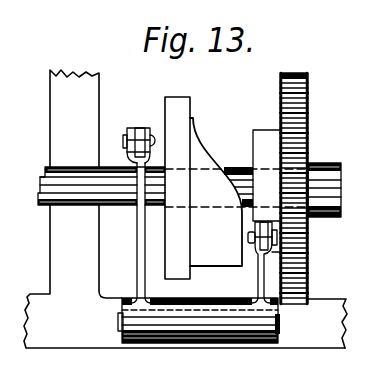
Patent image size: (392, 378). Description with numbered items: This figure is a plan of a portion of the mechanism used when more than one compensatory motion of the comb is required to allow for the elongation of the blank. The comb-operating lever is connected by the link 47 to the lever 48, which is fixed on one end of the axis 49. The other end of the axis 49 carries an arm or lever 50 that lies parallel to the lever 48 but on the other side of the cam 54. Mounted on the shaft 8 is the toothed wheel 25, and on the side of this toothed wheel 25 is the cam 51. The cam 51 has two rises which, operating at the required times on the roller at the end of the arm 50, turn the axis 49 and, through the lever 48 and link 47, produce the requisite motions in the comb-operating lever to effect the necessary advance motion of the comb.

The shaft 8 is at (124, 182).
The toothed wheel 25 is at (308, 108).
The link 47 is at (136, 140).
The lever 48 is at (137, 240).
The axis 49 is at (118, 322).
The arm or lever 50 is at (258, 284).
The cam 51 is at (281, 144).
The cam 54 is at (217, 180).